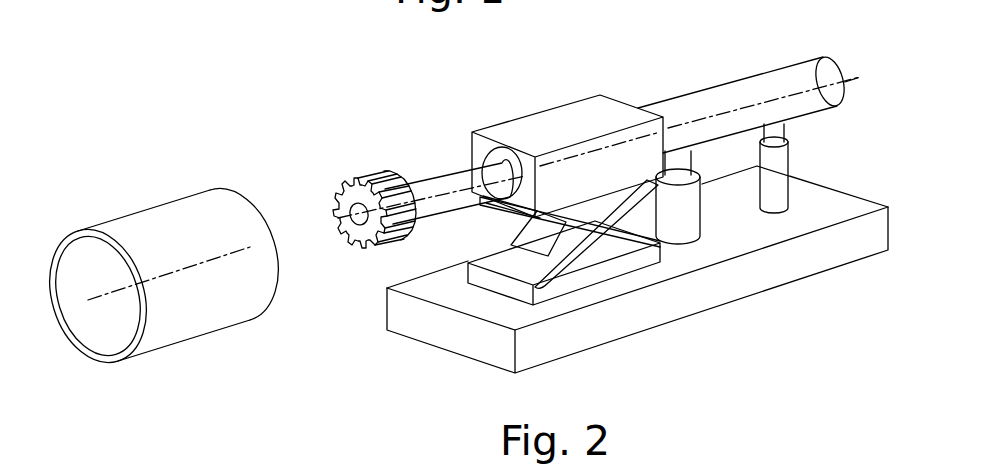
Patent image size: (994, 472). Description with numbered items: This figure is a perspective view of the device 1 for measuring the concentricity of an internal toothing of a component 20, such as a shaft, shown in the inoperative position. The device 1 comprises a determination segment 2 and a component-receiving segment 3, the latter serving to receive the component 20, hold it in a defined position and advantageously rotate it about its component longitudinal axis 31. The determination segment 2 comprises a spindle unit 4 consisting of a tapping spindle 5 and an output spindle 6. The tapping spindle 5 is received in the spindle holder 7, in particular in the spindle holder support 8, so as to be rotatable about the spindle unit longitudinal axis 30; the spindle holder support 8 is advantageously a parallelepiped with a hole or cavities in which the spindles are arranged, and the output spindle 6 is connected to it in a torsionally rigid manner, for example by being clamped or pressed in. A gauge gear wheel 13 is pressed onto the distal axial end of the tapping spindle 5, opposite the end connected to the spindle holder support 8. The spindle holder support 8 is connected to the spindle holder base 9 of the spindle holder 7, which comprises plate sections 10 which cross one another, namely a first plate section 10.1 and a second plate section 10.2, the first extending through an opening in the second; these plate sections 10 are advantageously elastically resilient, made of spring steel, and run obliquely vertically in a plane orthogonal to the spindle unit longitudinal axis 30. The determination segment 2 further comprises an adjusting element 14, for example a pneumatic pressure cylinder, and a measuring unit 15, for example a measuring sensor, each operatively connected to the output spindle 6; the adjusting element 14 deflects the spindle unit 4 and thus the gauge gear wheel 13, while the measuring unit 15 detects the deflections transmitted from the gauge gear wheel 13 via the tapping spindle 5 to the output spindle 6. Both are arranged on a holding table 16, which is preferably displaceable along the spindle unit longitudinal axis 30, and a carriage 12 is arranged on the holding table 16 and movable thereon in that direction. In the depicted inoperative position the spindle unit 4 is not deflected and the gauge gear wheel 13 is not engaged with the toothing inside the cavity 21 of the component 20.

The device 1 is at (610, 209).
The determination segment 2 is at (754, 79).
The component-receiving segment 3 is at (195, 350).
The spindle unit 4 is at (708, 73).
The tapping spindle 5 is at (425, 182).
The output spindle 6 is at (733, 100).
The spindle holder 7 is at (671, 109).
The spindle holder support 8 is at (583, 128).
The spindle holder base 9 is at (652, 284).
The plate sections 10 is at (539, 260).
The first plate section 10.1 is at (492, 262).
The second plate section 10.2 is at (537, 212).
The carriage 12 is at (603, 273).
The gauge gear wheel 13 is at (355, 178).
The adjusting element 14 is at (690, 212).
The measuring unit 15 is at (782, 170).
The holding table 16 is at (425, 330).
The component 20 is at (148, 265).
The cavity 21 is at (78, 252).
The spindle unit longitudinal axis 30 is at (848, 92).
The component longitudinal axis 31 is at (100, 305).